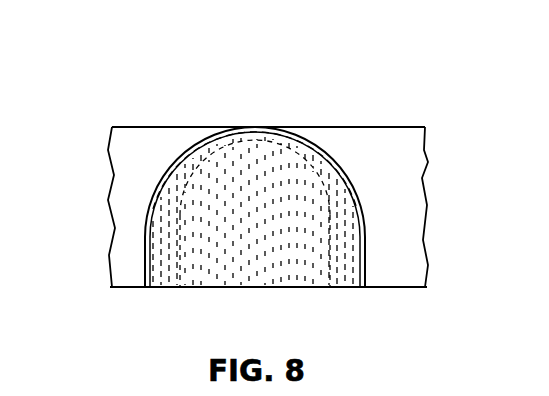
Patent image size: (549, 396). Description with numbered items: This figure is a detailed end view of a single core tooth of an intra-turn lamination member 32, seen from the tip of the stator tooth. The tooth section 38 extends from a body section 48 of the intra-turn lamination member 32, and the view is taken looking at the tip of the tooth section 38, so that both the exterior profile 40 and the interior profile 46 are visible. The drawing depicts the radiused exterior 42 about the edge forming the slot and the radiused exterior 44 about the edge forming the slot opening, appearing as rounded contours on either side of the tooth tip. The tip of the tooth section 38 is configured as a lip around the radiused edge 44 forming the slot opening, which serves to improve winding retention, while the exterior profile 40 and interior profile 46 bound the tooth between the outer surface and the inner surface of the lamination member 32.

The intra-turn lamination member 32 is at (172, 104).
The tooth section 38 is at (367, 297).
The exterior profile 40 is at (376, 126).
The radiused exterior 42 is at (148, 209).
The radiused exterior 44 is at (148, 233).
The interior profile 46 is at (128, 290).
The body section 48 is at (404, 150).